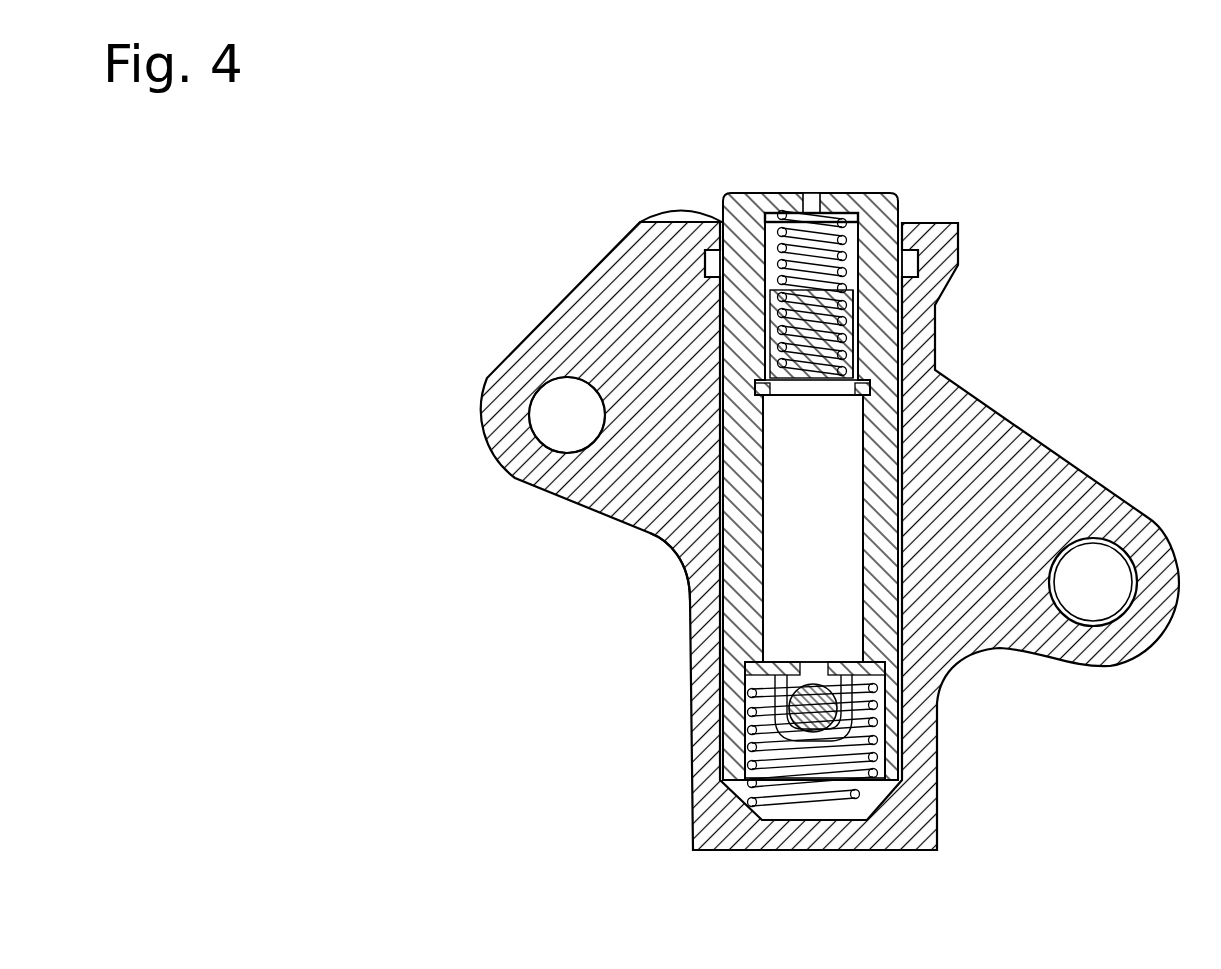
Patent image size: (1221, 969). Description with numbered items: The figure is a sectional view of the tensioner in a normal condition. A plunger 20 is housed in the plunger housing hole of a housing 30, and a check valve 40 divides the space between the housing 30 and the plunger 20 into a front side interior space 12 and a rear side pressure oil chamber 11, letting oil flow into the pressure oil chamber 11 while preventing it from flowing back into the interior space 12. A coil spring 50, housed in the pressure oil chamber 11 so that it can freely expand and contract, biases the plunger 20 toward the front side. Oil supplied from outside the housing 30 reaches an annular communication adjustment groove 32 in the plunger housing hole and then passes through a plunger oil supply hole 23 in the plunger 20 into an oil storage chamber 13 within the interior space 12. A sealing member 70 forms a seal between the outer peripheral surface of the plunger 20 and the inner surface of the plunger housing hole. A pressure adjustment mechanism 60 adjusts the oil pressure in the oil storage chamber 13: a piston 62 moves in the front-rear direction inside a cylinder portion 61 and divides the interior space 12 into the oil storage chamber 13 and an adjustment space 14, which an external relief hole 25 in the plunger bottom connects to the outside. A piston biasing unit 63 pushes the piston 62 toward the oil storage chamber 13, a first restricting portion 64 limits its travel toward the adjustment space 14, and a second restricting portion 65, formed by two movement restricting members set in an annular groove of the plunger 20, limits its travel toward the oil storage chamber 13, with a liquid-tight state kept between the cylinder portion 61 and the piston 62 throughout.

The pressure oil chamber 11 is at (832, 770).
The interior space 12 is at (1143, 272).
The oil storage chamber 13 is at (850, 455).
The adjustment space 14 is at (917, 268).
The plunger 20 is at (870, 205).
The plunger oil supply hole 23 is at (637, 527).
The external relief hole 25 is at (810, 193).
The housing 30 is at (613, 272).
The communication adjustment groove 32 is at (545, 500).
The check valve 40 is at (870, 707).
The coil spring 50 is at (755, 800).
The pressure adjustment mechanism 60 is at (760, 325).
The cylinder portion 61 is at (760, 365).
The piston 62 is at (860, 328).
The piston biasing unit 63 is at (850, 232).
The first restricting portion 64 is at (850, 220).
The second restricting portion 65 is at (765, 388).
The sealing member 70 is at (700, 213).